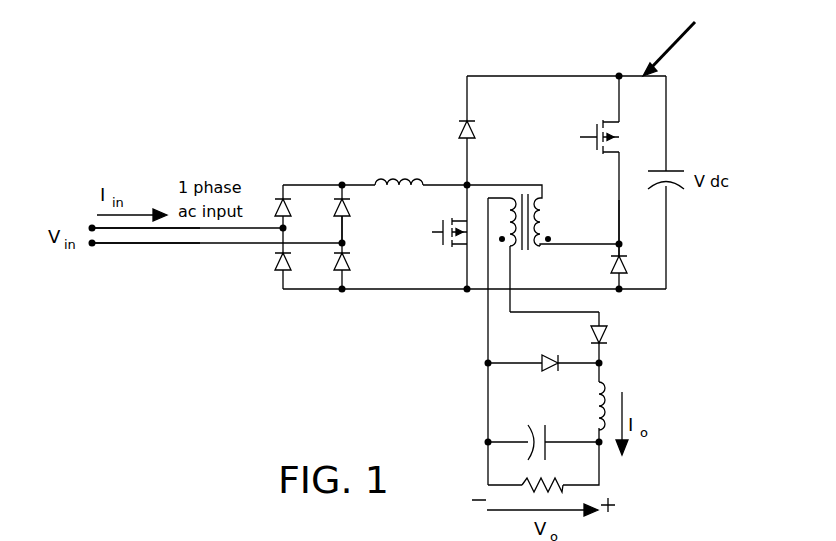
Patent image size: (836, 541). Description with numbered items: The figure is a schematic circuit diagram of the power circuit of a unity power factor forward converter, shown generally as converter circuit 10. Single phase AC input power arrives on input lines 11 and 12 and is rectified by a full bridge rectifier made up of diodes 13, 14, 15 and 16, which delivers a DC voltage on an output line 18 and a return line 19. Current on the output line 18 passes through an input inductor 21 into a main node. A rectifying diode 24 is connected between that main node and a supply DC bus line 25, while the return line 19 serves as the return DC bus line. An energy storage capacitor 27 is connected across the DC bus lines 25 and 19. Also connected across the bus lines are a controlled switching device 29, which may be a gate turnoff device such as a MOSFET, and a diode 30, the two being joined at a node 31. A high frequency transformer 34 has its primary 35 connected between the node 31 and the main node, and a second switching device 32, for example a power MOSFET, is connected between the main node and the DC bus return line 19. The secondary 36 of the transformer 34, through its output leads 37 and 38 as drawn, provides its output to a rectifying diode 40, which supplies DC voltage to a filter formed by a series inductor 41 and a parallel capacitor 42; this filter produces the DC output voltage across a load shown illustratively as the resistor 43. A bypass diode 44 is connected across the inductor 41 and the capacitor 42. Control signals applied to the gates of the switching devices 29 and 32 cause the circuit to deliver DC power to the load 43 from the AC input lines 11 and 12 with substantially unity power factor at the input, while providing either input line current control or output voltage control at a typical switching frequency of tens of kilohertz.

The converter circuit 10 is at (683, 40).
The input line 11 is at (138, 232).
The input line 12 is at (175, 243).
The diode 13 is at (278, 204).
The diode 14 is at (277, 260).
The diode 15 is at (349, 207).
The diode 16 is at (338, 262).
The output line 18 is at (358, 183).
The return line 19 is at (400, 290).
The input inductor 21 is at (405, 182).
The rectifying diode 24 is at (457, 133).
The supply DC bus line 25 is at (517, 76).
The energy storage capacitor 27 is at (672, 168).
The controlled switching device 29 is at (596, 135).
The diode 30 is at (625, 266).
The node 31 is at (622, 247).
The second switching device 32 is at (433, 232).
The high frequency transformer 34 is at (541, 248).
The primary 35 is at (541, 217).
The secondary 36 is at (511, 250).
The output line 37 is at (487, 298).
The output line 38 is at (486, 312).
The rectifying diode 40 is at (608, 335).
The series inductor 41 is at (603, 383).
The parallel capacitor 42 is at (560, 437).
The resistor 43 is at (557, 477).
The bypass diode 44 is at (549, 357).